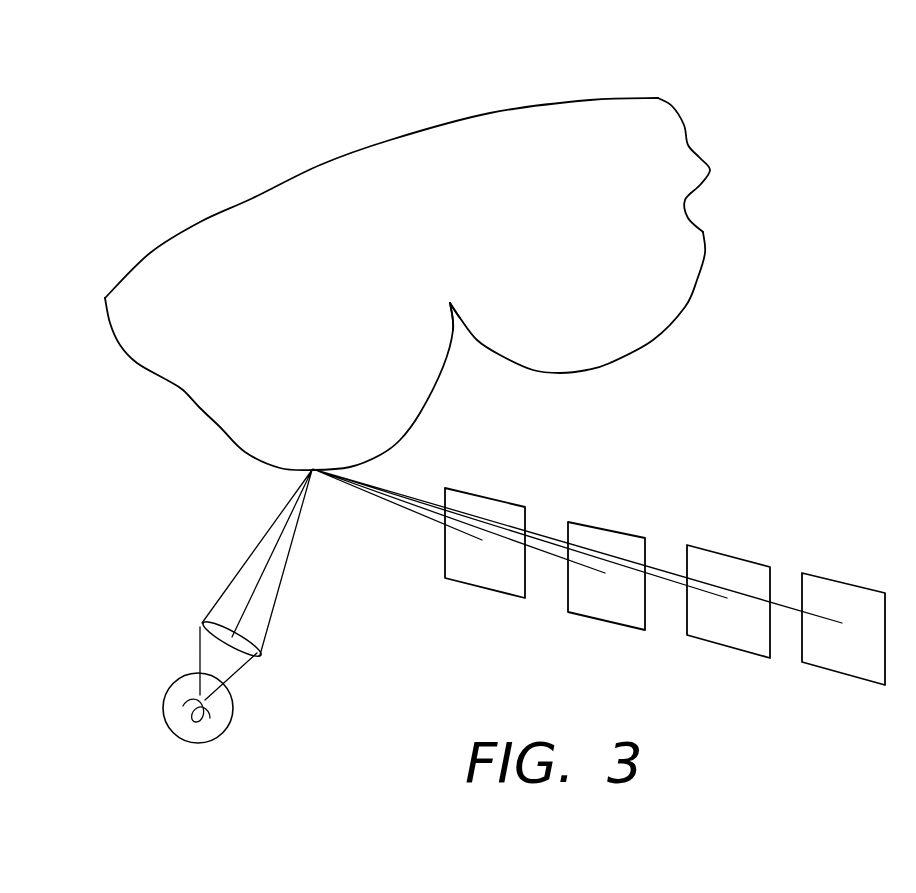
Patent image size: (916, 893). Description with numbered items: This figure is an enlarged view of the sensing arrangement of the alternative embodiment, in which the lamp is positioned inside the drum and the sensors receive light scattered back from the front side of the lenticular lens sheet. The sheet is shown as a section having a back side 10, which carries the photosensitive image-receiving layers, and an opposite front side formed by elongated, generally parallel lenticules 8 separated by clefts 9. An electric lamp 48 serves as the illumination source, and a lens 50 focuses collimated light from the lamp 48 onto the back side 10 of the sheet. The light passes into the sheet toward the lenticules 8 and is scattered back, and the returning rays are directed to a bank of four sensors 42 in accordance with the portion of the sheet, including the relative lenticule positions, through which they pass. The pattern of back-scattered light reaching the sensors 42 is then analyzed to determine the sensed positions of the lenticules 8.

The back side 10 is at (258, 217).
The lenticules 8 is at (285, 447).
The clefts 9 is at (452, 305).
The sensors 42 is at (478, 508).
The electric lamp 48 is at (175, 688).
The lens 50 is at (247, 652).